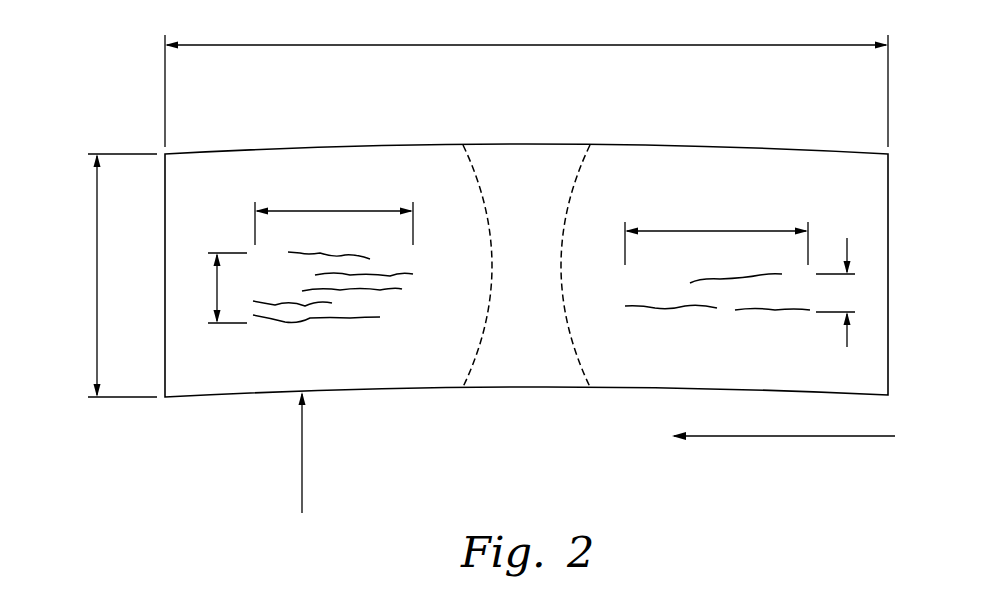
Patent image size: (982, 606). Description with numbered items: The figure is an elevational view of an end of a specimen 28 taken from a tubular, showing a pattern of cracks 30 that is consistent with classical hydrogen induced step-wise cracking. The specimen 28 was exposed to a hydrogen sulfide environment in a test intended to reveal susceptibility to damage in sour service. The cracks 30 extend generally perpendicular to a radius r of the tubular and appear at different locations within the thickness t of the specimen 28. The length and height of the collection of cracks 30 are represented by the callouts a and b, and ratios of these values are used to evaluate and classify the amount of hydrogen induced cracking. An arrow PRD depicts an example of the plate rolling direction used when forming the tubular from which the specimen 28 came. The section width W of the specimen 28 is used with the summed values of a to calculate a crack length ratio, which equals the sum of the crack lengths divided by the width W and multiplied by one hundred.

The specimen 28 is at (122, 101).
The cracks 30 is at (266, 349).
The section width W is at (526, 78).
The thickness t is at (115, 275).
The crack length a is at (531, 222).
The crack height b is at (531, 292).
The radius r is at (314, 452).
The plate rolling direction arrow PRD is at (783, 453).